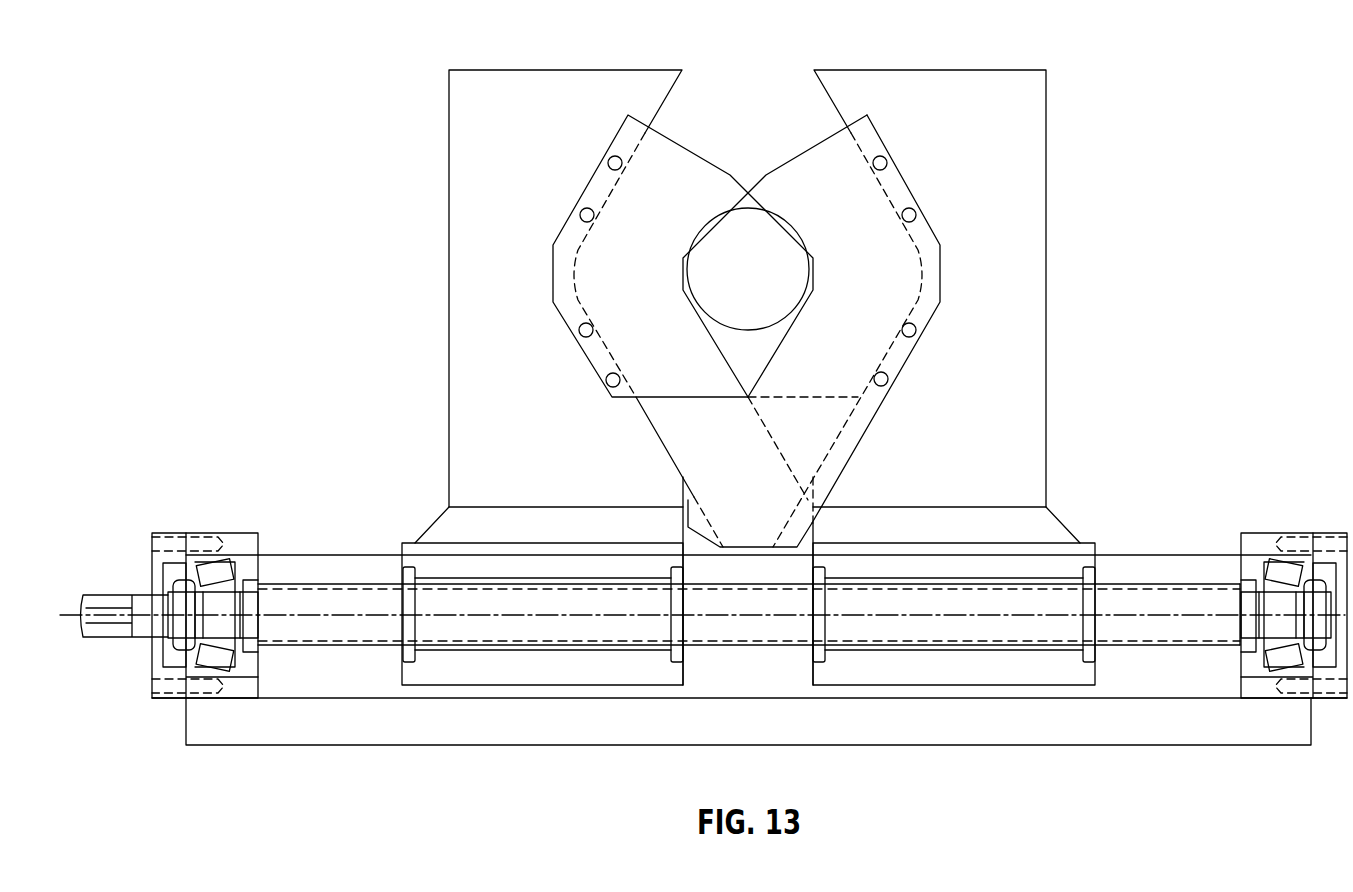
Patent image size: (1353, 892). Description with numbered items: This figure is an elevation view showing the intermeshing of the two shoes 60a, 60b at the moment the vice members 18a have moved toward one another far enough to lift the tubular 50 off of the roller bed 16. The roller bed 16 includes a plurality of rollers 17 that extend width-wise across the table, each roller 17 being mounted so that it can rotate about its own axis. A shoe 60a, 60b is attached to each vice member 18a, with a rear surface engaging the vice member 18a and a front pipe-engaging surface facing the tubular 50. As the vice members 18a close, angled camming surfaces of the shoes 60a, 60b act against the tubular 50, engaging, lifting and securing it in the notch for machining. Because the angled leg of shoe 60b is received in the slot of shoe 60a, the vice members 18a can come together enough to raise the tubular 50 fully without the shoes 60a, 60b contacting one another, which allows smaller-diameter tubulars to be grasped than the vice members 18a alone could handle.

The roller bed 16 is at (1174, 550).
The roller 17 is at (1043, 567).
The vice member 18a is at (566, 70).
The tubular 50 is at (748, 208).
The shoe 60a is at (841, 131).
The shoe 60b is at (657, 131).